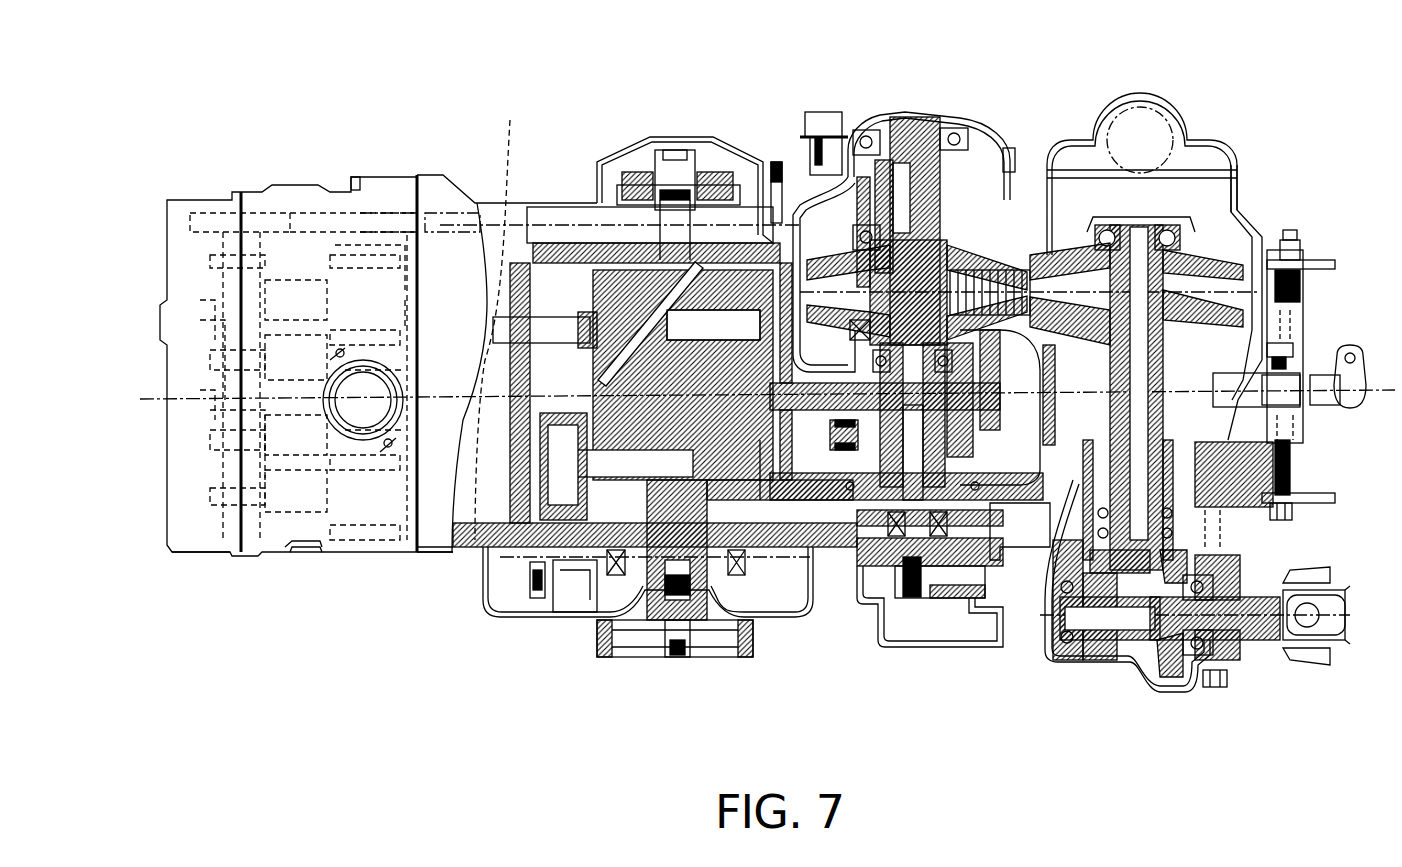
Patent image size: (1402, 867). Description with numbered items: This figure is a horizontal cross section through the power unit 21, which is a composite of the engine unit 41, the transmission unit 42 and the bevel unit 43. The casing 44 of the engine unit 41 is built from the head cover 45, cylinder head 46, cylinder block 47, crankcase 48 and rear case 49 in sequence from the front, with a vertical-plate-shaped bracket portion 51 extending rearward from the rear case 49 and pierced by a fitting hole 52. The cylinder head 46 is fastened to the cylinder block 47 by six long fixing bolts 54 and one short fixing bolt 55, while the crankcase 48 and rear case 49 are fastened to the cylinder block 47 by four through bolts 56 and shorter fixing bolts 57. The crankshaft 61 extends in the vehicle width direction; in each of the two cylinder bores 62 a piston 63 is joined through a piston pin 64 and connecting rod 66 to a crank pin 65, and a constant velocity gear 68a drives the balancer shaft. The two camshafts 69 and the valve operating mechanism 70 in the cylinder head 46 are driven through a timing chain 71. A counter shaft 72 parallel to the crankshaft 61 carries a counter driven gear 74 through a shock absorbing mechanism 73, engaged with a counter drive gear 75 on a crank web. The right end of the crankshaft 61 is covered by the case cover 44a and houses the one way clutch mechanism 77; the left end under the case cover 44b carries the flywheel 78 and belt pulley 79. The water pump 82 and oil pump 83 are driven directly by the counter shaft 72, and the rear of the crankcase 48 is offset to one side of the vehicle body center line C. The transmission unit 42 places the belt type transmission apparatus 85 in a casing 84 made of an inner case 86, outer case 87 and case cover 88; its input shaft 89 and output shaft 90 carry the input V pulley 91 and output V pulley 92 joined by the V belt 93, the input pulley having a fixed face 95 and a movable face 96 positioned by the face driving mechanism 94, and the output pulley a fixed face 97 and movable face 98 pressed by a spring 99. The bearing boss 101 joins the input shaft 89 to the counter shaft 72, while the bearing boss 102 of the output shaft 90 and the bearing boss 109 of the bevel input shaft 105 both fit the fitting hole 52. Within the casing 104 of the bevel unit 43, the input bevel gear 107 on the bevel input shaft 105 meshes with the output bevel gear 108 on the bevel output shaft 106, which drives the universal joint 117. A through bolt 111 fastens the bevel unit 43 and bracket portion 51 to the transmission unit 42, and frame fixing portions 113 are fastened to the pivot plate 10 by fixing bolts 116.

The power unit 21 is at (263, 110).
The engine unit 41 is at (378, 578).
The transmission unit 42 is at (1262, 140).
The bevel unit 43 is at (1100, 698).
The casing 44 is at (457, 172).
The case cover 44a is at (637, 152).
The case cover 44b is at (510, 620).
The head cover 45 is at (205, 555).
The cylinder head 46 is at (305, 552).
The cylinder block 47 is at (425, 552).
The crankcase 48 is at (827, 552).
The rear case 49 is at (1030, 548).
The bracket portion 51 is at (1250, 510).
The fitting hole 52 is at (1062, 450).
The long fixing bolt 54 is at (365, 205).
The short fixing bolt 55 is at (398, 200).
The through bolt 56 is at (1035, 372).
The fixing bolt 57 is at (773, 160).
The crankshaft 61 is at (598, 290).
The cylinder bore 62 is at (558, 263).
The piston 63 is at (498, 318).
The piston pin 64 is at (560, 343).
The crank pin 65 is at (668, 328).
The connecting rod 66 is at (525, 343).
The constant velocity gear 68a is at (752, 305).
The camshaft 69 is at (210, 330).
The valve operating mechanism 70 is at (230, 415).
The timing chain 71 is at (340, 195).
The counter shaft 72 is at (860, 488).
The shock absorbing mechanism 73 is at (840, 548).
The counter driven gear 74 is at (790, 500).
The counter drive gear 75 is at (768, 500).
The one way clutch mechanism 77 is at (720, 168).
The flywheel 78 is at (570, 600).
The belt pulley 79 is at (635, 657).
The water pump 82 is at (880, 647).
The oil pump 83 is at (830, 432).
The casing 84 is at (1352, 150).
The belt type transmission apparatus 85 is at (783, 45).
The inner case 86 is at (1299, 306).
The outer case 87 is at (1250, 206).
The case cover 88 is at (1245, 152).
The input shaft 89 is at (900, 120).
The output shaft 90 is at (1137, 170).
The input V pulley 91 is at (797, 112).
The output V pulley 92 is at (1192, 158).
The V belt 93 is at (1230, 160).
The face driving mechanism 94 is at (1025, 132).
The fixed face 95 is at (857, 330).
The movable face 96 is at (823, 262).
The fixed face 97 is at (1072, 240).
The movable face 98 is at (1030, 318).
The spring 99 is at (1293, 348).
The bearing boss 101 is at (1000, 372).
The bearing boss 102 is at (1290, 455).
The casing 104 is at (1050, 660).
The bevel input shaft 105 is at (1133, 672).
The bevel output shaft 106 is at (1240, 660).
The input bevel gear 107 is at (1090, 662).
The output bevel gear 108 is at (1168, 678).
The bearing boss 109 is at (1240, 468).
The pivot plate 10 is at (1320, 505).
The through bolt 111 is at (1212, 688).
The frame fixing portion 113 is at (1300, 418).
The fixing bolt 116 is at (1300, 522).
The universal joint 117 is at (1308, 670).
The vehicle body center line C is at (1387, 378).